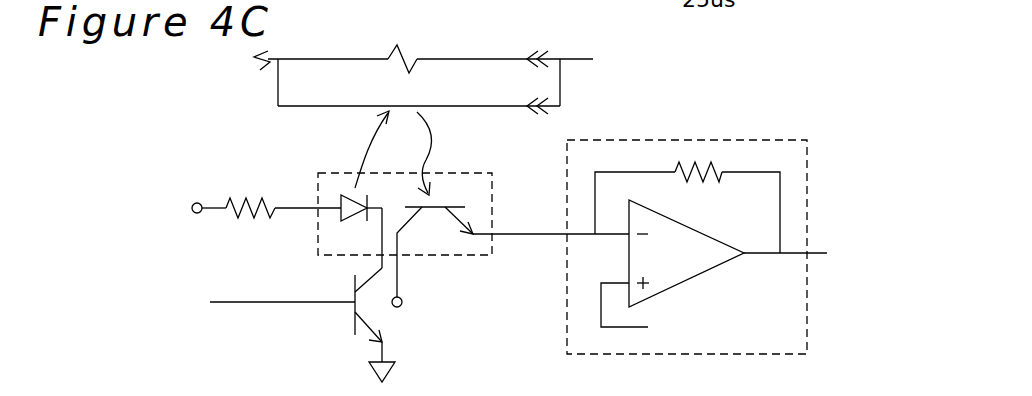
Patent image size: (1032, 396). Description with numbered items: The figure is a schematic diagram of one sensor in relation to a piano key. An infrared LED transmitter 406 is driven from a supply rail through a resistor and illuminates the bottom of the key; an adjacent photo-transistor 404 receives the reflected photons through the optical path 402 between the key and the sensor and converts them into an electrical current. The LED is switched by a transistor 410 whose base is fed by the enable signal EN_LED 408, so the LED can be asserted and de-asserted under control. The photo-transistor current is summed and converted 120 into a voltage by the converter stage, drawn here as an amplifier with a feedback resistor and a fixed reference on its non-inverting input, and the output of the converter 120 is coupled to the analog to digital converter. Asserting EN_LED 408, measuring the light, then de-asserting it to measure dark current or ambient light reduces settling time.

The current-to-voltage converter 120 is at (622, 136).
The optical path / light guide 402 is at (450, 106).
The phototransistor (optocoupler receiver) 404 is at (457, 175).
The light emitting diode 406 is at (314, 188).
The LED enable signal EN_LED 408 is at (226, 287).
The switching transistor 410 is at (349, 325).